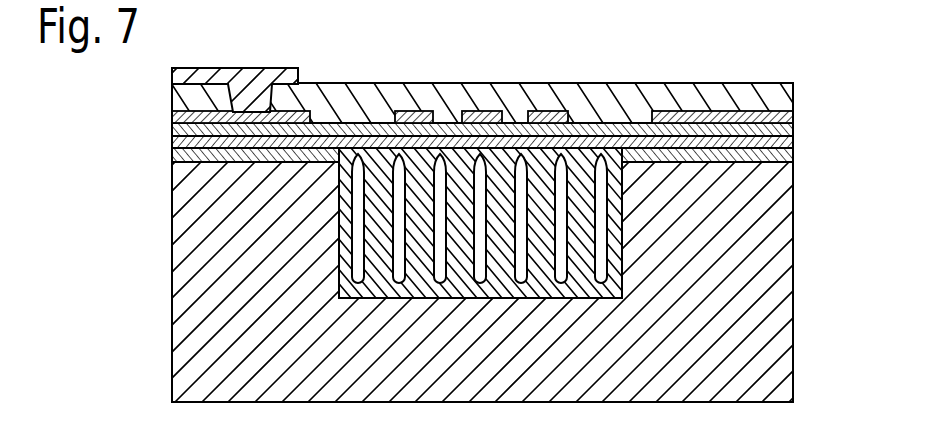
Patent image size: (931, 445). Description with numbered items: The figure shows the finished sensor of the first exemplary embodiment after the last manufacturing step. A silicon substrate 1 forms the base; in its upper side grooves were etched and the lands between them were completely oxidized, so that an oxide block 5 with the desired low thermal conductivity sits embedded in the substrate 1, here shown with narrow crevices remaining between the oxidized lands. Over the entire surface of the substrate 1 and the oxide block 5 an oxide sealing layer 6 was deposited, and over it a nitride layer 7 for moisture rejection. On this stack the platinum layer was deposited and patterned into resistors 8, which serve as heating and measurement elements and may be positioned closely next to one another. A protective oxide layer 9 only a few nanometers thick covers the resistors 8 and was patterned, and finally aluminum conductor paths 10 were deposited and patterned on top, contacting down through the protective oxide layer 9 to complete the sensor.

The silicon substrate 1 is at (785, 305).
The oxide block 5 is at (381, 165).
The oxide sealing layer 6 is at (787, 143).
The nitride layer 7 is at (787, 127).
The resistors 8 is at (553, 111).
The protective oxide layer 9 is at (347, 107).
The aluminum conductor paths 10 is at (247, 78).